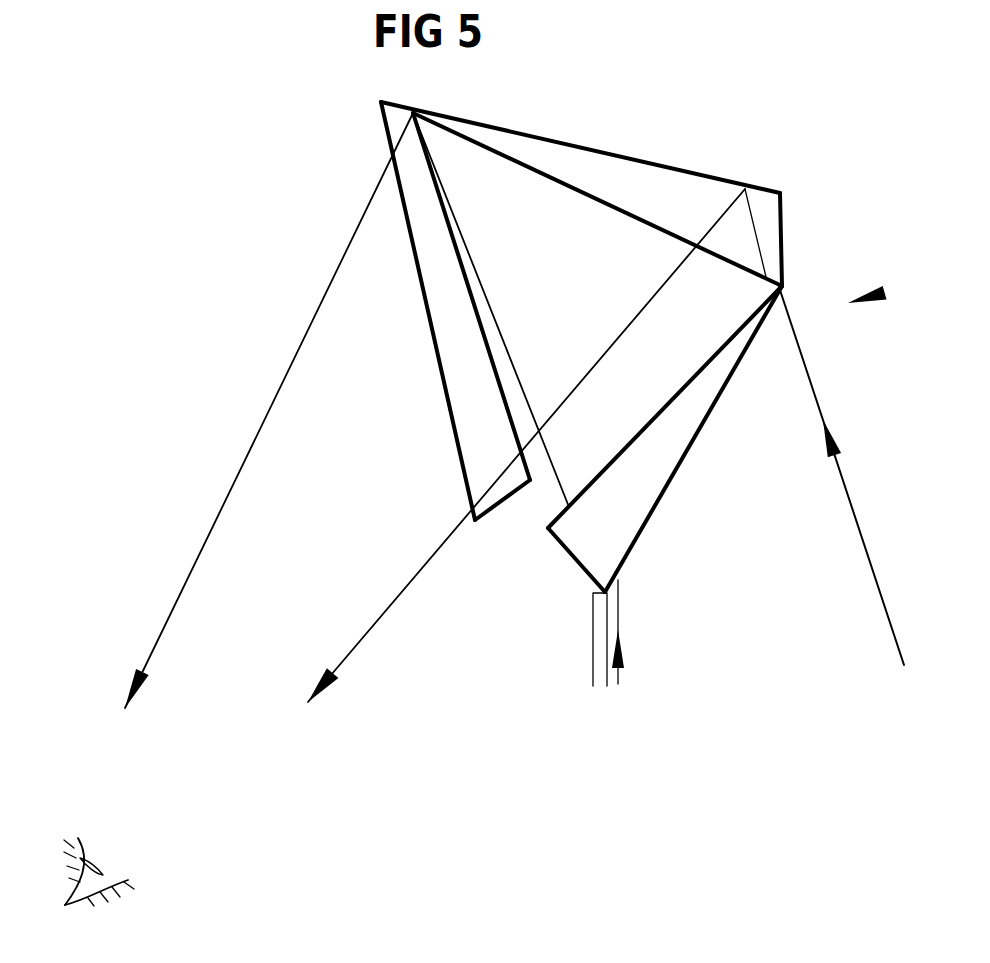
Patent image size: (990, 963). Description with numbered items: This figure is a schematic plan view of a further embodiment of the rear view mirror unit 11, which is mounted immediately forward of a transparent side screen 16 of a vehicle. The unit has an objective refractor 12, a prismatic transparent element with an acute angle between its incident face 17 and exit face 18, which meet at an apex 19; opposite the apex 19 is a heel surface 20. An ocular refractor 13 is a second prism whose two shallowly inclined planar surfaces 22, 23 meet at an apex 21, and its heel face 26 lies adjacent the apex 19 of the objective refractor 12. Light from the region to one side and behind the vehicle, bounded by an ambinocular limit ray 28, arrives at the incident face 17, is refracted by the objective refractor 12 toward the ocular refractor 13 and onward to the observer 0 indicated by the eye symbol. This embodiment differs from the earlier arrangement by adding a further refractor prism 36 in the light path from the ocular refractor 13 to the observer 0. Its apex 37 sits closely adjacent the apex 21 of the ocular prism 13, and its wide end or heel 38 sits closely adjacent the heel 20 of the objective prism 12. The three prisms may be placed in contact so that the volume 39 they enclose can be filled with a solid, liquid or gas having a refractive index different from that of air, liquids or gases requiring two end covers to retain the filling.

The observer 0 is at (115, 880).
The rear view mirror unit 11 is at (888, 293).
The objective refractor 12 is at (617, 505).
The ocular refractor 13 is at (577, 178).
The transparent side screen 16 is at (593, 640).
The incident face 17 is at (687, 462).
The exit face 18 is at (557, 512).
The apex 19 is at (707, 367).
The heel surface 20 is at (560, 544).
The apex 21 is at (381, 102).
The inclined surface 22 is at (638, 222).
The inclined surface 23 is at (528, 133).
The heel face 26 is at (770, 222).
The ambinocular limit ray 28 is at (866, 530).
The additional refractor prism 36 is at (440, 350).
The apex 37 is at (392, 158).
The heel 38 is at (485, 518).
The volume 39 is at (558, 357).